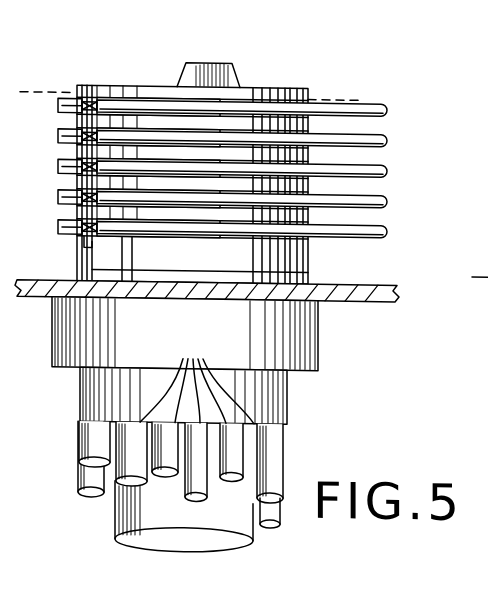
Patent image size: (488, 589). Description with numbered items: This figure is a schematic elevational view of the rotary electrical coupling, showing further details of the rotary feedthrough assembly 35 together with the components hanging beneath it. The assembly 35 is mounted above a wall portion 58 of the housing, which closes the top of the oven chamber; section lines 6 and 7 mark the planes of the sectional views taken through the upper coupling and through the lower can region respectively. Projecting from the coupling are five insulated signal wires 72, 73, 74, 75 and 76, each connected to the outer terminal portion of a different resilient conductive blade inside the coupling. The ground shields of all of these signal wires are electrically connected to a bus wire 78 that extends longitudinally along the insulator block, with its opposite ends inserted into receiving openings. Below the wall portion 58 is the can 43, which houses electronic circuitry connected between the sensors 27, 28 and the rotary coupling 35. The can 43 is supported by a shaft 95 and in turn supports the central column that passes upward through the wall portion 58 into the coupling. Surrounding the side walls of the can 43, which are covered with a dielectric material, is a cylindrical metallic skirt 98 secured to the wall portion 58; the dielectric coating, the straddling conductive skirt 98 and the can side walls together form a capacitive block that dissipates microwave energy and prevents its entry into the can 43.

The rotary feedthrough assembly 35 is at (137, 79).
The section line 6- 6 is at (41, 88).
The section line 7- 7 is at (483, 273).
The insulated signal wire 72 is at (251, 108).
The insulated signal wire 73 is at (270, 141).
The insulated signal wire 74 is at (285, 169).
The insulated signal wire 75 is at (244, 204).
The insulated signal wire 76 is at (287, 229).
The bus wire 78 is at (58, 148).
The wall portion 58 is at (382, 277).
The cylindrical metallic skirt 98 is at (312, 330).
The can 43 is at (284, 389).
The sensor 28 is at (197, 377).
The sensor 27 is at (93, 452).
The shaft 95 is at (118, 513).